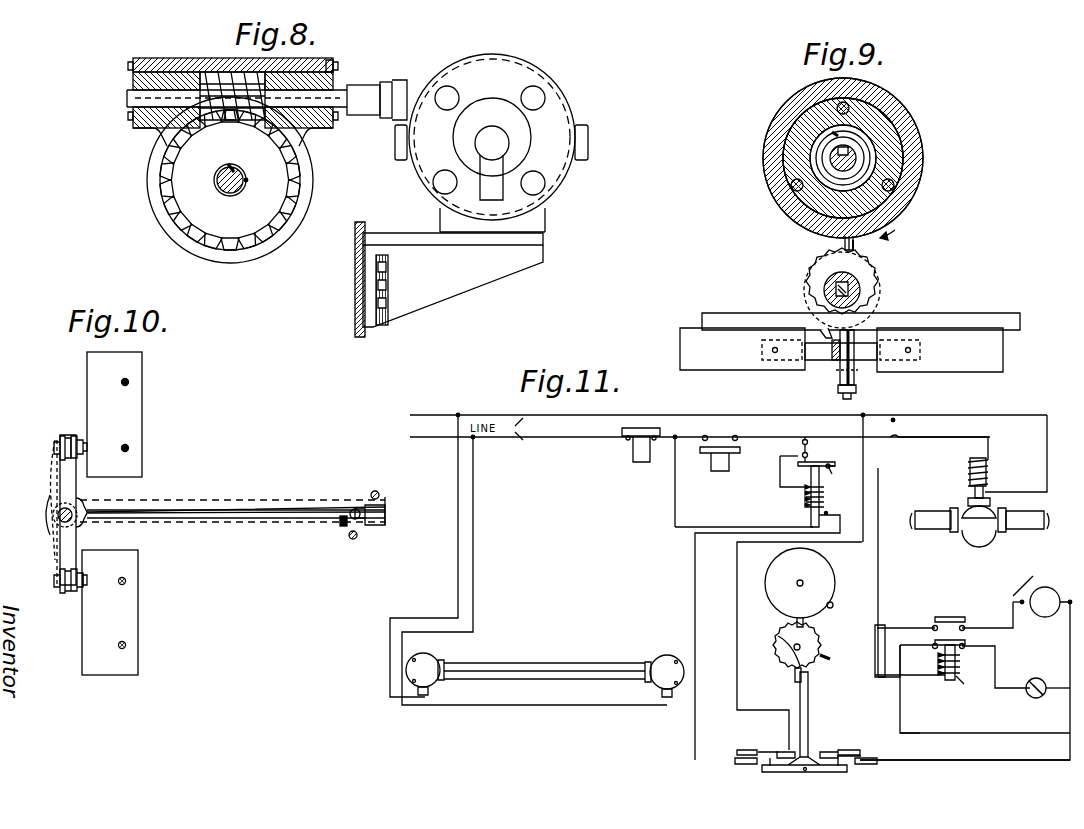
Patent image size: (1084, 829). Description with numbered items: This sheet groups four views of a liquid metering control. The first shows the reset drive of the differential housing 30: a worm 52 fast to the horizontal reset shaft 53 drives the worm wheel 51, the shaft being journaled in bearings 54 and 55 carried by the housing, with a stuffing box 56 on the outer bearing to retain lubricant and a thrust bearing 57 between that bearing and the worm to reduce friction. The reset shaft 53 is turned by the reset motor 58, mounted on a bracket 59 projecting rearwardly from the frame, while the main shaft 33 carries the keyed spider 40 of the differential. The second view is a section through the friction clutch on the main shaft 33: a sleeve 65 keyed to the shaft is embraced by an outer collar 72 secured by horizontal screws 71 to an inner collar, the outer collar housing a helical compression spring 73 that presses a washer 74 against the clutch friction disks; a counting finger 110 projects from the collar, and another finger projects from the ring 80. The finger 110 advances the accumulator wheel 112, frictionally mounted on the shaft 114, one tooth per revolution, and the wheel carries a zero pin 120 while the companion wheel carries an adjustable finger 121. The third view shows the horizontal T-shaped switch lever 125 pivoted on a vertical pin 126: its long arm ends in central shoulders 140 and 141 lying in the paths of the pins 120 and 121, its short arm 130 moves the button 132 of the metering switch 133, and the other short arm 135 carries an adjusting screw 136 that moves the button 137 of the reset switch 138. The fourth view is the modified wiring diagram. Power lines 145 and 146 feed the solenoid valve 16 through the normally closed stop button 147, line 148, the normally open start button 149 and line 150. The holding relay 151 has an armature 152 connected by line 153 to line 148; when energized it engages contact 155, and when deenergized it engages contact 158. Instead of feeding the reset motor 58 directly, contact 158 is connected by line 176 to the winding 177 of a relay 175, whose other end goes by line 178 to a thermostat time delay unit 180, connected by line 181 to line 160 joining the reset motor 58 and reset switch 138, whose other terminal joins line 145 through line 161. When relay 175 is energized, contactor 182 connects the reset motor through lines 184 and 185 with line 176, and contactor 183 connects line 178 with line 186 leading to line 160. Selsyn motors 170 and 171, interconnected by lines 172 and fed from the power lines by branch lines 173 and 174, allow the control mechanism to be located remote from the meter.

In FIG. 11, the solenoid valve 16 is at (990, 498).
In FIG. 8, the differential housing 30 is at (243, 250).
In FIG. 8, the main shaft 33 is at (216, 183).
In FIG. 9, the main shaft 33 is at (858, 157).
In FIG. 8, the spider 40 is at (244, 176).
In FIG. 8, the worm wheel 51 is at (202, 210).
In FIG. 8, the worm 52 is at (226, 72).
In FIG. 8, the reset shaft 53 is at (127, 97).
In FIG. 8, the bearing 54 is at (140, 60).
In FIG. 8, the bearing 55 is at (330, 60).
In FIG. 8, the stuffing box 56 is at (346, 85).
In FIG. 8, the thrust bearing 57 is at (285, 71).
In FIG. 8, the reset motor 58 is at (525, 76).
In FIG. 11, the reset motor 58 is at (966, 673).
In FIG. 8, the bracket 59 is at (470, 284).
In FIG. 9, the sleeve 65 is at (864, 146).
In FIG. 9, the horizontal screws 71 is at (850, 112).
In FIG. 9, the outer collar 72 is at (880, 125).
In FIG. 9, the helical compression spring 73 is at (882, 200).
In FIG. 9, the washer 74 is at (822, 148).
In FIG. 9, the ring 80 is at (778, 118).
In FIG. 9, the counting finger 110 is at (858, 248).
In FIG. 9, the accumulator wheel 112 is at (818, 286).
In FIG. 9, the shaft 114 is at (860, 291).
In FIG. 9, the zero pin 120 is at (820, 332).
In FIG. 10, the zero pin 120 is at (353, 540).
In FIG. 11, the zero pin 120 is at (796, 680).
In FIG. 10, the adjustable finger 121 is at (377, 491).
In FIG. 11, the adjustable finger 121 is at (826, 655).
In FIG. 9, the switch lever 125 is at (858, 362).
In FIG. 10, the switch lever 125 is at (248, 492).
In FIG. 11, the switch lever 125 is at (808, 710).
In FIG. 9, the vertical pin 126 is at (845, 398).
In FIG. 10, the vertical pin 126 is at (72, 514).
In FIG. 9, the short arm 130 is at (812, 352).
In FIG. 10, the short arm 130 is at (62, 548).
In FIG. 9, the button 132 is at (775, 340).
In FIG. 10, the button 132 is at (80, 590).
In FIG. 9, the metering switch 133 is at (742, 349).
In FIG. 10, the metering switch 133 is at (162, 612).
In FIG. 11, the metering switch 133 is at (765, 742).
In FIG. 9, the short arm 135 is at (862, 345).
In FIG. 10, the short arm 135 is at (62, 478).
In FIG. 10, the adjusting screw 136 is at (54, 447).
In FIG. 9, the button 137 is at (908, 345).
In FIG. 10, the button 137 is at (80, 435).
In FIG. 9, the reset switch 138 is at (940, 350).
In FIG. 10, the reset switch 138 is at (157, 414).
In FIG. 11, the reset switch 138 is at (874, 760).
In FIG. 9, the central shoulder 140 is at (834, 355).
In FIG. 10, the central shoulder 140 is at (344, 527).
In FIG. 10, the central shoulder 141 is at (386, 513).
In FIG. 11, the power line 145 is at (458, 415).
In FIG. 11, the power line 146 is at (446, 437).
In FIG. 11, the stop button 147 is at (635, 450).
In FIG. 11, the line 148 is at (675, 436).
In FIG. 11, the start button 149 is at (720, 447).
In FIG. 11, the line 150 is at (939, 439).
In FIG. 11, the holding relay 151 is at (828, 504).
In FIG. 11, the armature 152 is at (818, 516).
In FIG. 11, the line 153 is at (682, 506).
In FIG. 11, the contact 155 is at (809, 454).
In FIG. 11, the contact 158 is at (832, 474).
In FIG. 11, the line 160 is at (1070, 758).
In FIG. 11, the line 161 is at (881, 554).
In FIG. 11, the Selsyn motor 170 is at (413, 674).
In FIG. 11, the Selsyn motor 171 is at (660, 680).
In FIG. 11, the lines 172 is at (542, 672).
In FIG. 11, the branch line 173 is at (458, 585).
In FIG. 11, the branch line 174 is at (472, 585).
In FIG. 11, the relay 175 is at (954, 695).
In FIG. 11, the line 176 is at (876, 645).
In FIG. 11, the winding 177 is at (964, 684).
In FIG. 11, the line 178 is at (982, 650).
In FIG. 11, the thermostat time delay unit 180 is at (1036, 682).
In FIG. 11, the line 181 is at (1055, 698).
In FIG. 11, the contactor 182 is at (947, 617).
In FIG. 11, the contactor 183 is at (952, 622).
In FIG. 11, the line 184 is at (905, 628).
In FIG. 11, the line 185 is at (1018, 602).
In FIG. 11, the line 186 is at (930, 735).